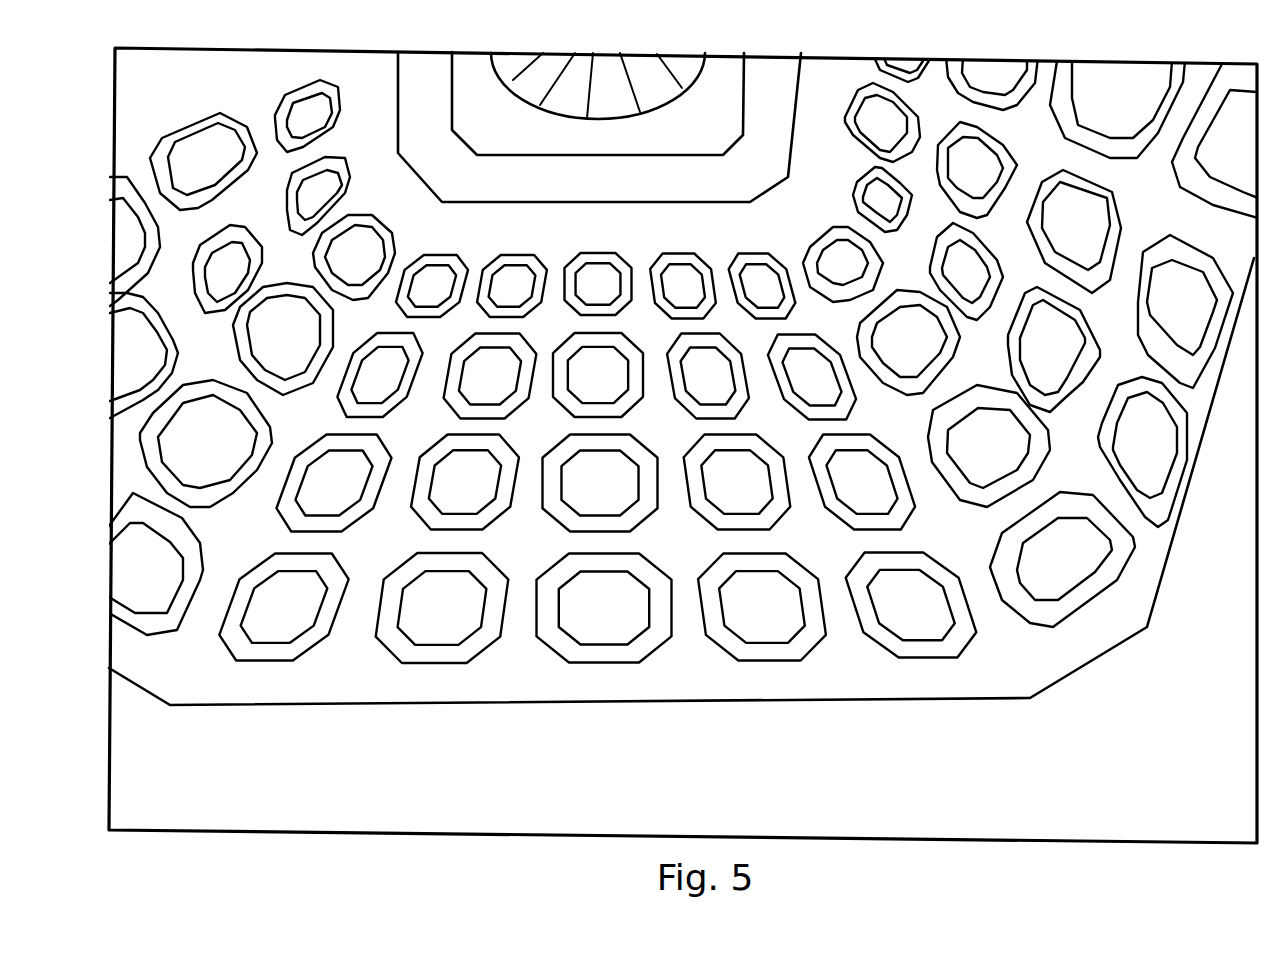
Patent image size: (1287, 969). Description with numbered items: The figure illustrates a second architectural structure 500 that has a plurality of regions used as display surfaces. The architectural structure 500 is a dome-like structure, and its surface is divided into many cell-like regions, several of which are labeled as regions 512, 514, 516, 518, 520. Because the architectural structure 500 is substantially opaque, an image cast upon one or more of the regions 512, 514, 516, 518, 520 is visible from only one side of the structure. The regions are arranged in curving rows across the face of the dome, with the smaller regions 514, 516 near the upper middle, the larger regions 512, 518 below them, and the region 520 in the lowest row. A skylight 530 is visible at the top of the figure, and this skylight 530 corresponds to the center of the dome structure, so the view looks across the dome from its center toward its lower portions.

The architectural structure 500 is at (594, 235).
The region 512 is at (610, 492).
The region 514 is at (612, 360).
The region 516 is at (722, 368).
The region 518 is at (743, 490).
The region 520 is at (787, 622).
The skylight 530 is at (653, 73).